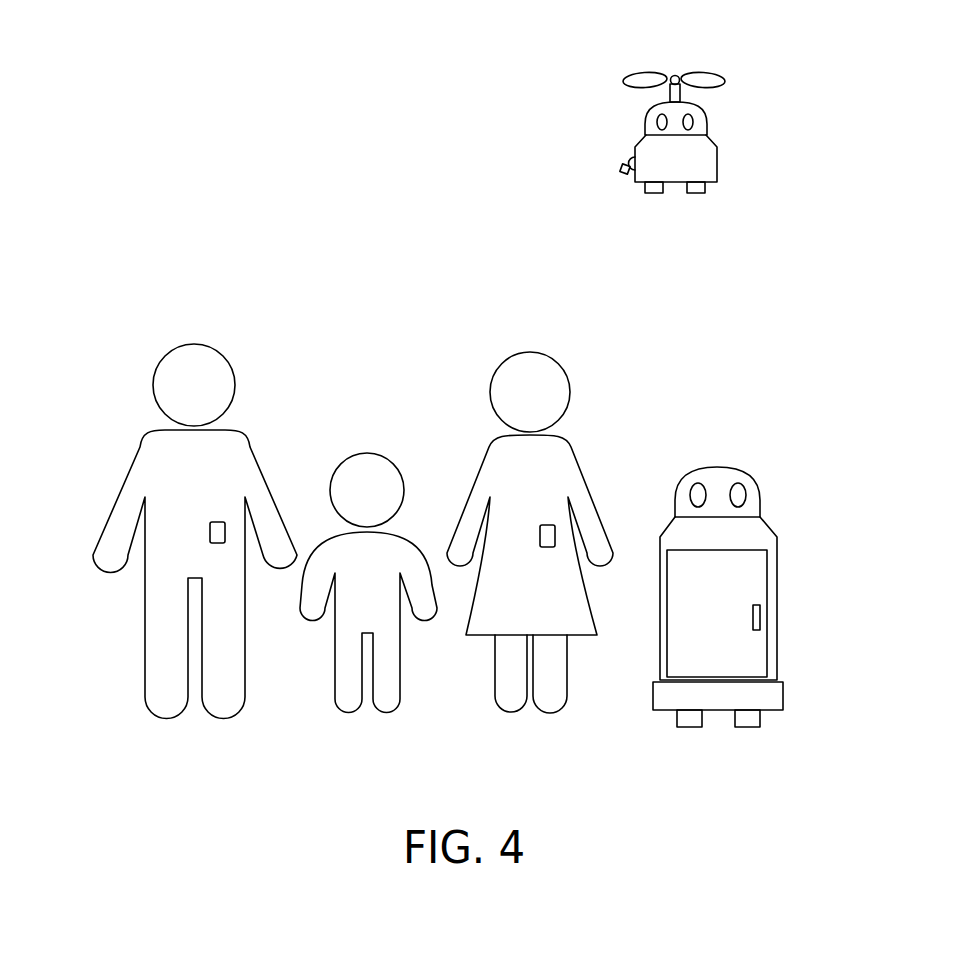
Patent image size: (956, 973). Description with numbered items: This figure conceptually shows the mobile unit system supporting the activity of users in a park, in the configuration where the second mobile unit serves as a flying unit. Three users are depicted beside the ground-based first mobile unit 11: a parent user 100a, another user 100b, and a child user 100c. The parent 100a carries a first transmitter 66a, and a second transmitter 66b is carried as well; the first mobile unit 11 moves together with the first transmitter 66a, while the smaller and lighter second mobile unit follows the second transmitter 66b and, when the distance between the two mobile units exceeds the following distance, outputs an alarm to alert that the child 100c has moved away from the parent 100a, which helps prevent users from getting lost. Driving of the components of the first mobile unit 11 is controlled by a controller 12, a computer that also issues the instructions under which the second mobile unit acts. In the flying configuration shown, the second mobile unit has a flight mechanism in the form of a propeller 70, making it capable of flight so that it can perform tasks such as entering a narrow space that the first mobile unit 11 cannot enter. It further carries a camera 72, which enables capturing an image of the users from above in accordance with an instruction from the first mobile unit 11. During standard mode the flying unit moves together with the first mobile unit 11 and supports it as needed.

The controller 12 is at (686, 101).
The propeller 70 is at (703, 70).
The camera 72 is at (623, 163).
The first mobile unit 11 is at (765, 522).
The parent user 100a is at (171, 531).
The adult female user 100b is at (560, 532).
The child user 100c is at (367, 450).
The first transmitter 66a is at (218, 522).
The second transmitter 66b is at (547, 525).